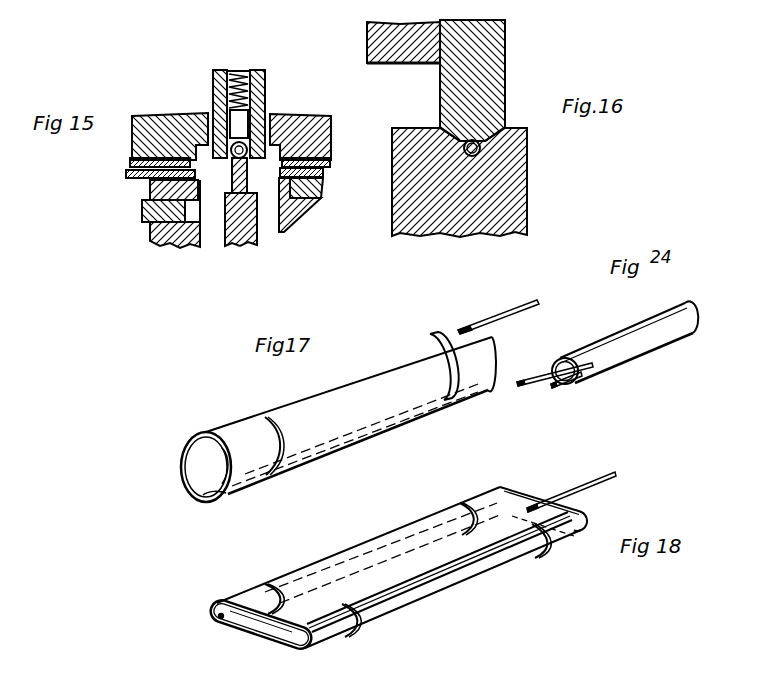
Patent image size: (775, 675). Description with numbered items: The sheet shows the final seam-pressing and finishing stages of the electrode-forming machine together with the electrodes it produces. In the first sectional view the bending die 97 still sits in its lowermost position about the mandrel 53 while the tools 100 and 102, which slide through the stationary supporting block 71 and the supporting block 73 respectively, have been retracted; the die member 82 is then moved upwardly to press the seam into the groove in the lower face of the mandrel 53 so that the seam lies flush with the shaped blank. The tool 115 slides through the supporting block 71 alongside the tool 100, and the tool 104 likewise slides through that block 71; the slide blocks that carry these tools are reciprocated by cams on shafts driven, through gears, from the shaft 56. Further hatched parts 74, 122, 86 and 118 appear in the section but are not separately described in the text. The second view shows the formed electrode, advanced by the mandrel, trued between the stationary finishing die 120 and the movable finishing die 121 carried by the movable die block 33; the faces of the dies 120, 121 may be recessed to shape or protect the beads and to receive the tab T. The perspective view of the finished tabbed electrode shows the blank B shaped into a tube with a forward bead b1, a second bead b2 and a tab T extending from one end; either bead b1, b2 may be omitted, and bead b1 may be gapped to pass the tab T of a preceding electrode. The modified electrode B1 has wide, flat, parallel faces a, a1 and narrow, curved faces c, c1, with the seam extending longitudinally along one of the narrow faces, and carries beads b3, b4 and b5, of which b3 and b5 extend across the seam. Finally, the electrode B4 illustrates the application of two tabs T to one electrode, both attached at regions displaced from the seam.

In FIG. 15, the clamping jaw block 74 is at (160, 122).
In FIG. 15, the plunger block 122 is at (231, 124).
In FIG. 15, the bending die 97 is at (260, 110).
In FIG. 15, the mandrel 53 is at (248, 146).
In FIG. 16, the mandrel 53 is at (482, 142).
In FIG. 15, the tool 100 is at (130, 163).
In FIG. 15, the tool 102 is at (330, 163).
In FIG. 15, the tool 104 is at (131, 177).
In FIG. 15, the pin 86 is at (247, 173).
In FIG. 15, the tool 115 is at (163, 211).
In FIG. 15, the wedge block 118 is at (306, 188).
In FIG. 15, the die member 82 is at (252, 222).
In FIG. 15, the supporting block 73 is at (285, 226).
In FIG. 15, the stationary supporting block 71 is at (150, 233).
In FIG. 16, the movable die block 33 is at (413, 52).
In FIG. 16, the movable finishing die 121 is at (494, 72).
In FIG. 16, the finishing die 120 is at (520, 163).
In FIG. 17, the blank B is at (355, 387).
In FIG. 17, the forward bead b1 is at (253, 404).
In FIG. 17, the bead b2 is at (429, 338).
In FIG. 17, the tab T is at (495, 313).
In FIG. 24, the tab T is at (537, 383).
In FIG. 18, the tab T is at (578, 482).
In FIG. 24, the channel bar B4 is at (615, 352).
In FIG. 18, the flat tubular bar B1 is at (472, 570).
In FIG. 18, the bead b3 is at (461, 503).
In FIG. 18, the bead b4 is at (550, 549).
In FIG. 18, the bead b5 is at (263, 587).
In FIG. 18, the wide flat face a is at (332, 572).
In FIG. 18, the wide flat face a1 is at (255, 634).
In FIG. 18, the narrow curved face c is at (322, 633).
In FIG. 18, the narrow curved face c1 is at (212, 617).
In FIG. 18, the shaft 56 is at (357, 625).